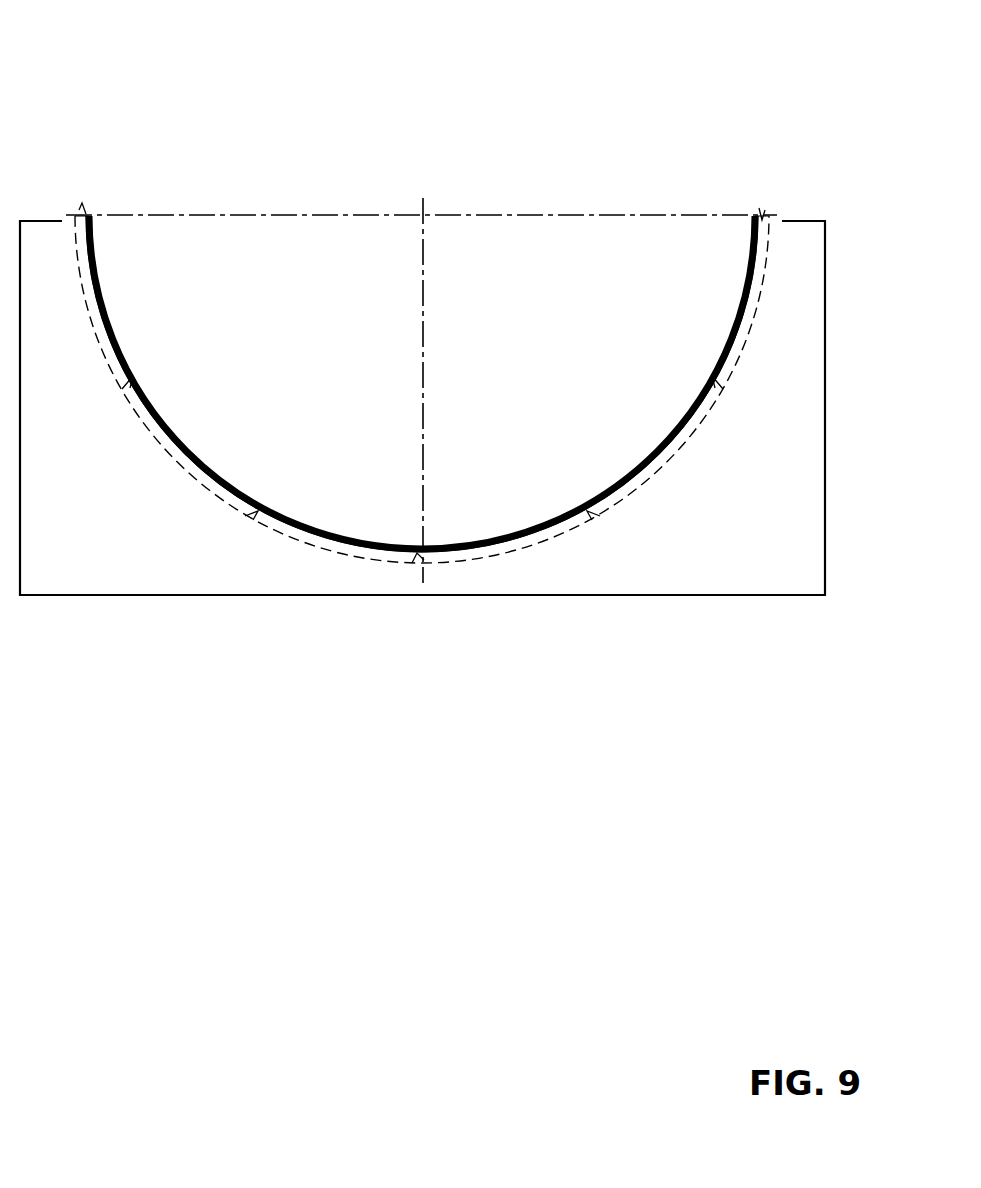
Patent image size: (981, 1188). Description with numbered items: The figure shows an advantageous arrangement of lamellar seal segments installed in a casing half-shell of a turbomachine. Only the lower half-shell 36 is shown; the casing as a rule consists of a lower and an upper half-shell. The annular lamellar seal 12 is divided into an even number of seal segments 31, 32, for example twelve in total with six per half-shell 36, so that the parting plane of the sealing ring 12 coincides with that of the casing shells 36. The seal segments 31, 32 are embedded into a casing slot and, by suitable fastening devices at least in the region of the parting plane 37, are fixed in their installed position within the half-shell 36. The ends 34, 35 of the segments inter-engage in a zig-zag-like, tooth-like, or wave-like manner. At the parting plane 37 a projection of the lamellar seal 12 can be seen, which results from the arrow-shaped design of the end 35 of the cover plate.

The annular lamellar seal 12 is at (318, 536).
The seal segment 31 is at (745, 326).
The seal segment 32 is at (653, 463).
The end 34 is at (763, 212).
The end 35 is at (82, 203).
The casing half-shell 36 is at (667, 551).
The parting plane 37 is at (568, 213).